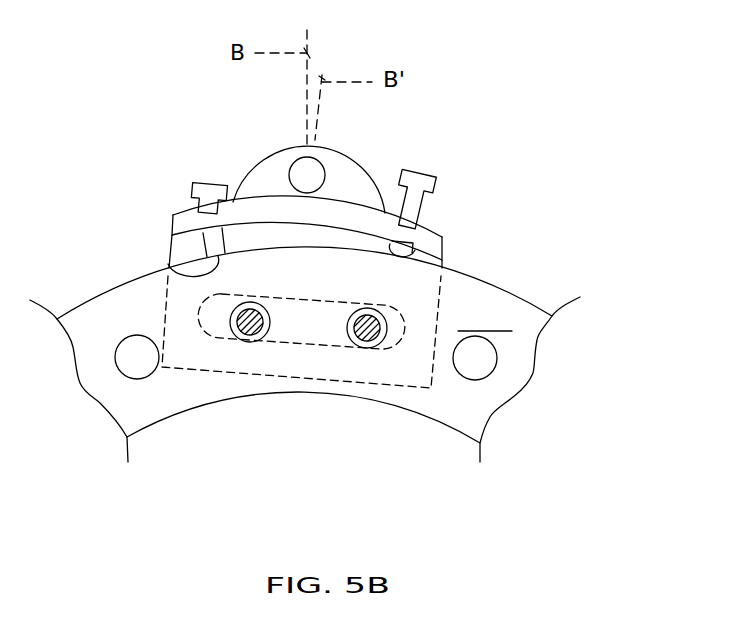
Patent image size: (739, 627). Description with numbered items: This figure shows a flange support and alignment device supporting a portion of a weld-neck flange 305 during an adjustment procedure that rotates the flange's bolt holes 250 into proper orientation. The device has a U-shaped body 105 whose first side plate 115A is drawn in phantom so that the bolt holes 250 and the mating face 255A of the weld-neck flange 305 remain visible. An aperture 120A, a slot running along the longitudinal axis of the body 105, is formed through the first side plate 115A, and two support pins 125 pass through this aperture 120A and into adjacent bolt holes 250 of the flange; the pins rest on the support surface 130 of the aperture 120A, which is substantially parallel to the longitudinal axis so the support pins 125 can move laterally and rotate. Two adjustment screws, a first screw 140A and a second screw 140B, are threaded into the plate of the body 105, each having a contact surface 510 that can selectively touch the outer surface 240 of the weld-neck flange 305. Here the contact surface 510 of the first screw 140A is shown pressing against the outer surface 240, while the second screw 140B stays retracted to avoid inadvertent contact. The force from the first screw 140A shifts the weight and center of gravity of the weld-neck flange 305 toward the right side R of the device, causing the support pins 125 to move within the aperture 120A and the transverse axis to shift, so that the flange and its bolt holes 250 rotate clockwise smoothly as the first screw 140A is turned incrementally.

The body 105 is at (430, 225).
The first side plate 115A is at (467, 261).
The aperture 120A is at (409, 345).
The support pins 125 is at (364, 306).
The support surface 130 is at (294, 341).
The first screw 140A is at (205, 183).
The second screw 140B is at (420, 172).
The outer surface 240 is at (507, 292).
The bolt holes 250 is at (250, 347).
The mating face 255A is at (485, 319).
The weld-neck flange 305 is at (518, 358).
The contact surface 510 is at (183, 267).
The right side R is at (444, 400).